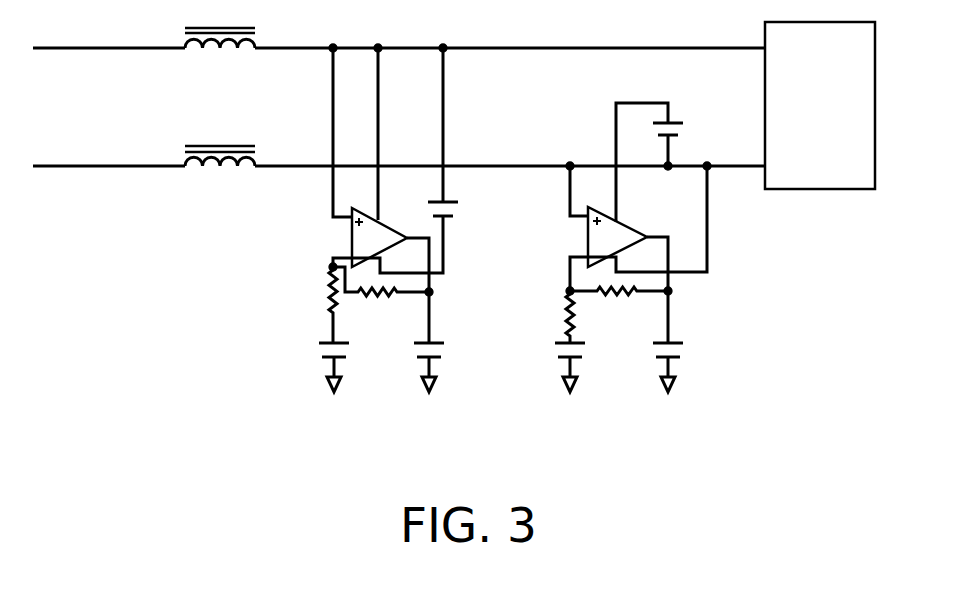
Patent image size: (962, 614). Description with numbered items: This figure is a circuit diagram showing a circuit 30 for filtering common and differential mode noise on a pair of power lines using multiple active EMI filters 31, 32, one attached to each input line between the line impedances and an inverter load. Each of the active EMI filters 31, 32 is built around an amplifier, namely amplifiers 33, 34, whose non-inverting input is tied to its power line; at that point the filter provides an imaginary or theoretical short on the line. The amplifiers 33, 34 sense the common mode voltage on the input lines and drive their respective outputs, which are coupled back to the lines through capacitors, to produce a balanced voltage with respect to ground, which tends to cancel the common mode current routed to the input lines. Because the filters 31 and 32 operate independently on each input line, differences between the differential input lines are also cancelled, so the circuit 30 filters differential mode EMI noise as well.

The circuit 30 is at (507, 406).
The active EMI filter 31 is at (345, 218).
The active EMI filter 32 is at (670, 247).
The amplifier 33 is at (391, 220).
The amplifier 34 is at (629, 223).